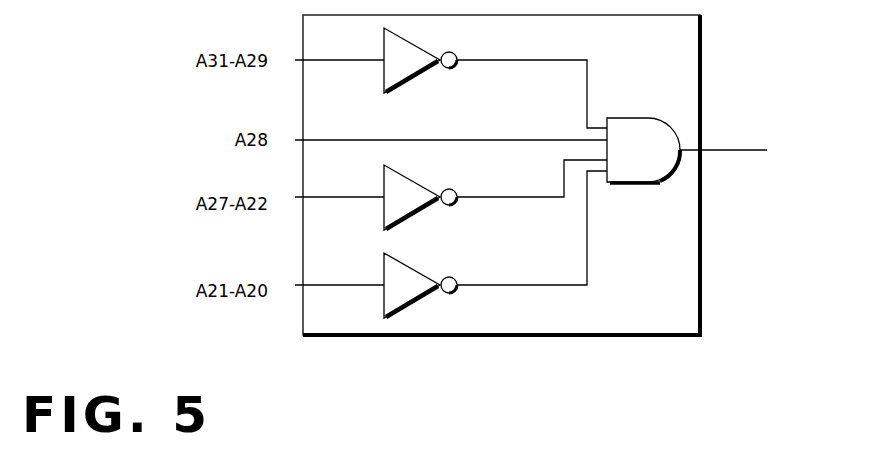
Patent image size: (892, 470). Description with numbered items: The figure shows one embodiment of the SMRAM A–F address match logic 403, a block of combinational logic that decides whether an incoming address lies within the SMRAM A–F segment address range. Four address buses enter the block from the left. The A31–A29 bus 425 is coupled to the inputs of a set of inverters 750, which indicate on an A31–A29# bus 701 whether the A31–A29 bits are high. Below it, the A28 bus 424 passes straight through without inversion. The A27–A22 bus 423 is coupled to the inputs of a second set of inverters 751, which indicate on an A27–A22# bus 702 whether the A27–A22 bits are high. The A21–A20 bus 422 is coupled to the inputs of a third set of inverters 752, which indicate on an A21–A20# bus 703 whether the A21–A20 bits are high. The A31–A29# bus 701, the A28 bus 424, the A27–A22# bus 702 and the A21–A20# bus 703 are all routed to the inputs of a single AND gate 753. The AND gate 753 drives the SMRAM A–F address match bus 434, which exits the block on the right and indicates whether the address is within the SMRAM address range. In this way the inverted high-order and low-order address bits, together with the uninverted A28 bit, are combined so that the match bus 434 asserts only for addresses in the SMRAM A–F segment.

The SMRAM A–F address match logic 403 is at (691, 327).
The A31–A29 bus 425 is at (318, 57).
The A28 bus 424 is at (318, 137).
The A27–A22 bus 423 is at (318, 194).
The A21–A20 bus 422 is at (318, 282).
The set of inverters 750 is at (420, 70).
The set of inverters 751 is at (420, 207).
The set of inverters 752 is at (420, 295).
The AND gate 753 is at (652, 160).
The A31–A29# bus 701 is at (490, 58).
The A27–A22# bus 702 is at (490, 195).
The A21–A20# bus 703 is at (490, 283).
The SMRAM A–F address match bus 434 is at (727, 148).